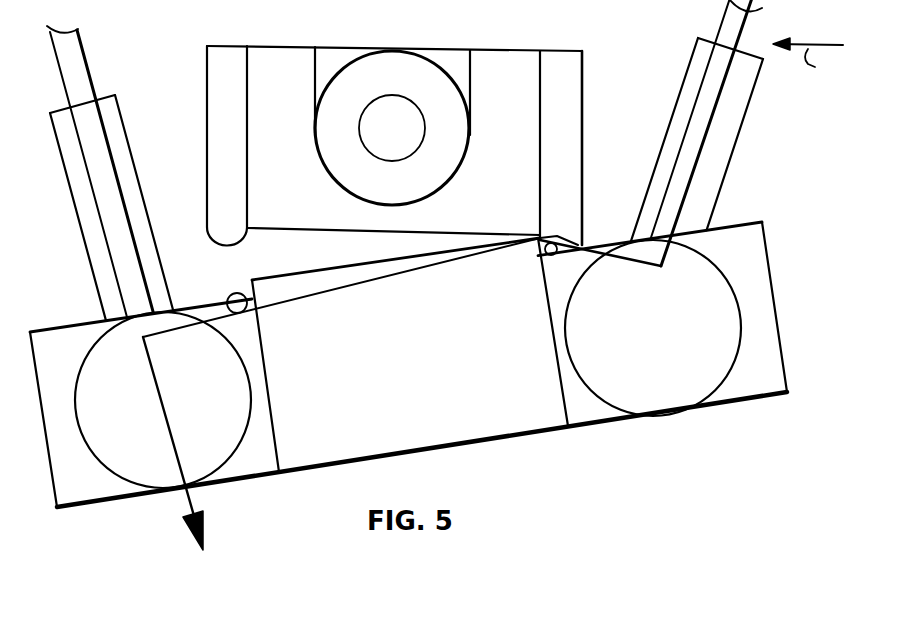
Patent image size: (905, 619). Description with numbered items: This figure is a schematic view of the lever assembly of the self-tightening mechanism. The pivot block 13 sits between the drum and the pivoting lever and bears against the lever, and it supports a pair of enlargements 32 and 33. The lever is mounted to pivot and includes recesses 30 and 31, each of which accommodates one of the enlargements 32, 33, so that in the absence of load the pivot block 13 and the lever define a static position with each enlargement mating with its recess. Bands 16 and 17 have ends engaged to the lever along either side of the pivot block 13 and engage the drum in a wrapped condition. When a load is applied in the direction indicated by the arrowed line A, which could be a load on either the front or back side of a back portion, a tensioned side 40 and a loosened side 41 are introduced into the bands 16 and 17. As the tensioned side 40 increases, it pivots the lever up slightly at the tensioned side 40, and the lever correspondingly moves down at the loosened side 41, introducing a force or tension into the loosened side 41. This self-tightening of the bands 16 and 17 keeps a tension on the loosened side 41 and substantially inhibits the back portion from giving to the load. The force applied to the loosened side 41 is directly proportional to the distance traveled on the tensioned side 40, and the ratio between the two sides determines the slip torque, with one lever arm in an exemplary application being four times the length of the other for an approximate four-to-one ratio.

The pivot block 13 is at (453, 65).
The band 16 is at (88, 257).
The band 17 is at (68, 188).
The recess 30 is at (247, 310).
The recess 31 is at (560, 255).
The enlargement 32 is at (222, 230).
The enlargement 33 is at (578, 235).
The tensioned side 40 is at (758, 12).
The loosened side 41 is at (178, 460).